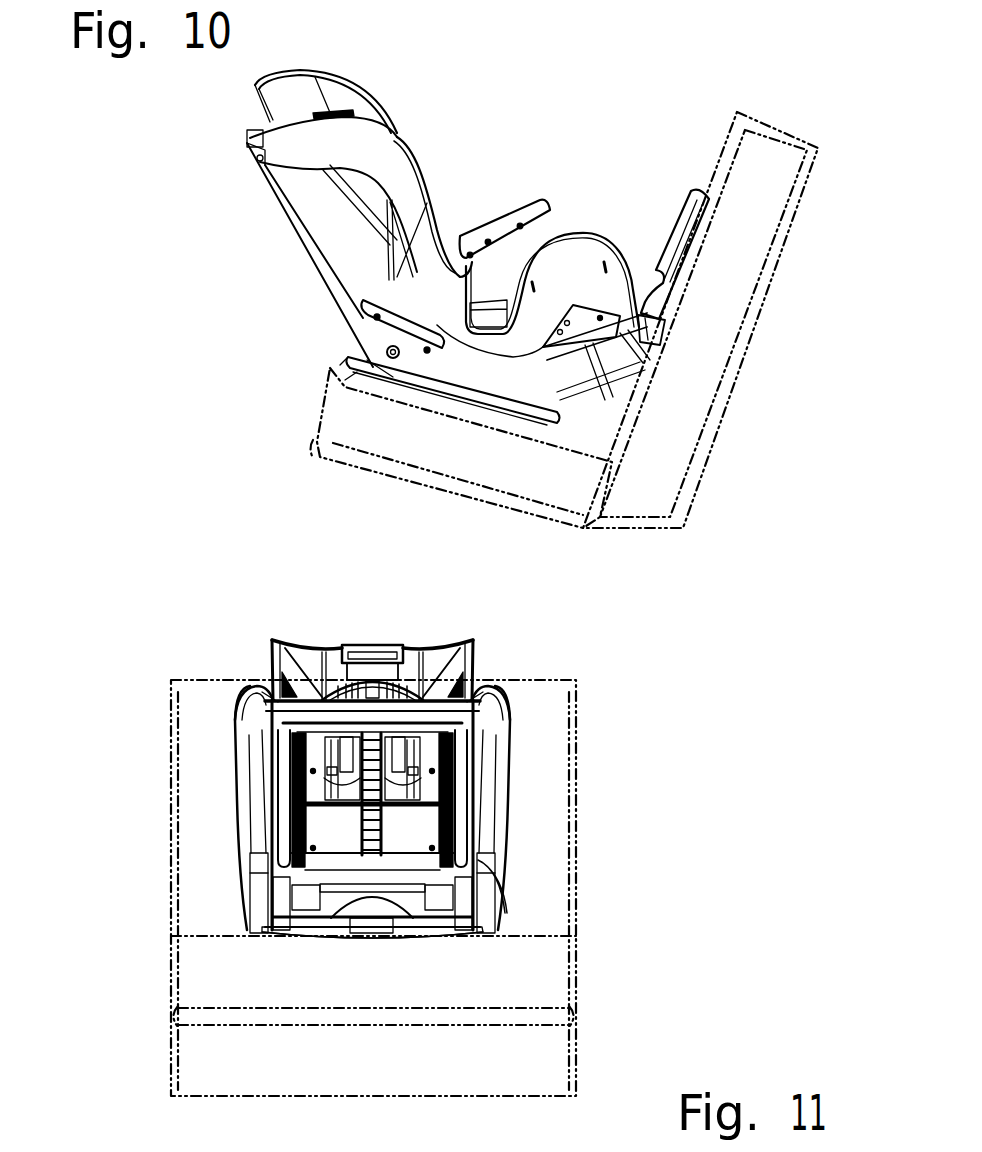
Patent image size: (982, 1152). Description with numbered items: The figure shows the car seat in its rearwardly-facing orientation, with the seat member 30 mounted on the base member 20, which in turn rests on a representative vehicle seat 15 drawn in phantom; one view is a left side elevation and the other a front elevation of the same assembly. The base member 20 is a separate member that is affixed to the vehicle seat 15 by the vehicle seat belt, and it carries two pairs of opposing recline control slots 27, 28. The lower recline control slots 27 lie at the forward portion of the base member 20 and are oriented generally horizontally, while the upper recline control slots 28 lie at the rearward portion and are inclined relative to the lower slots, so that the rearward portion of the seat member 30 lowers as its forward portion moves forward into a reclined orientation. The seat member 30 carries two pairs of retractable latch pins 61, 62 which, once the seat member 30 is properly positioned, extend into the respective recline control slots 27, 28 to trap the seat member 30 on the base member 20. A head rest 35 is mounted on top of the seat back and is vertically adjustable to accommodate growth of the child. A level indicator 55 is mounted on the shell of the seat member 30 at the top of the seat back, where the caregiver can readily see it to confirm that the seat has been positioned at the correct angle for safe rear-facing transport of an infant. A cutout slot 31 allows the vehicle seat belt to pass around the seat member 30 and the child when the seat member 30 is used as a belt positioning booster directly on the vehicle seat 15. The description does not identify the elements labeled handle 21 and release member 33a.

In FIG. 10, the vehicle seat 15 is at (707, 463).
In FIG. 11, the vehicle seat 15 is at (167, 710).
In FIG. 10, the base member 20 is at (587, 385).
In FIG. 11, the base member 20 is at (447, 927).
In FIG. 10, the handle 21 is at (684, 207).
In FIG. 10, the lower recline control slots 27 is at (372, 340).
In FIG. 10, the upper recline control slots 28 is at (665, 316).
In FIG. 10, the seat member 30 is at (403, 167).
In FIG. 11, the seat member 30 is at (503, 717).
In FIG. 10, the cutout slot 31 is at (495, 285).
In FIG. 11, the release member 33a is at (347, 888).
In FIG. 10, the head rest 35 is at (360, 84).
In FIG. 11, the head rest 35 is at (475, 687).
In FIG. 10, the level indicator 55 is at (330, 114).
In FIG. 11, the level indicator 55 is at (490, 690).
In FIG. 10, the latch pins 61 is at (643, 340).
In FIG. 10, the latch pins 62 is at (360, 317).